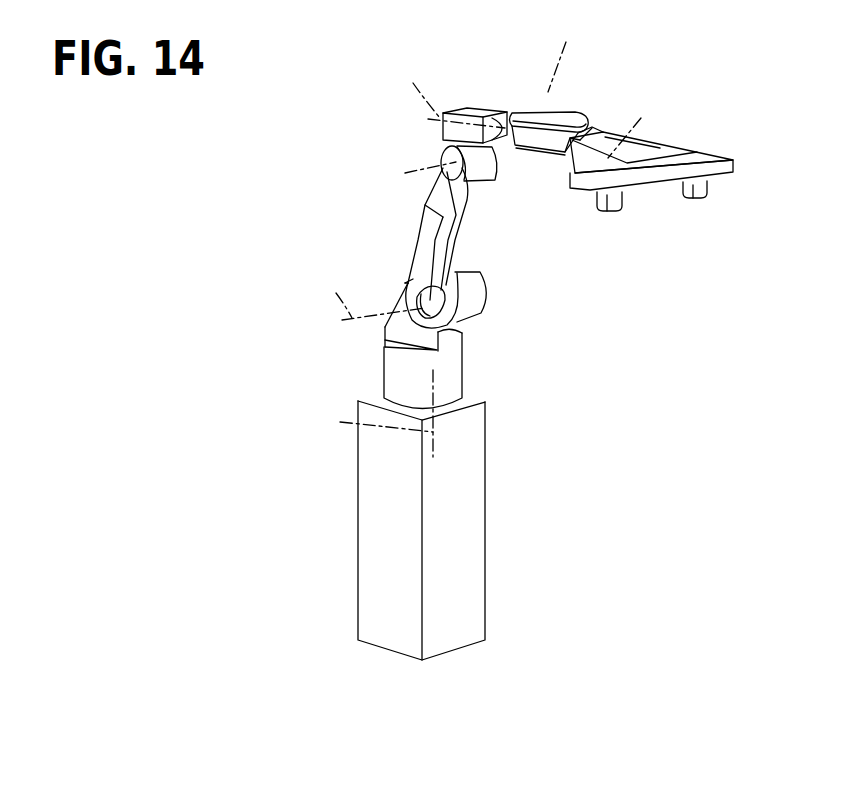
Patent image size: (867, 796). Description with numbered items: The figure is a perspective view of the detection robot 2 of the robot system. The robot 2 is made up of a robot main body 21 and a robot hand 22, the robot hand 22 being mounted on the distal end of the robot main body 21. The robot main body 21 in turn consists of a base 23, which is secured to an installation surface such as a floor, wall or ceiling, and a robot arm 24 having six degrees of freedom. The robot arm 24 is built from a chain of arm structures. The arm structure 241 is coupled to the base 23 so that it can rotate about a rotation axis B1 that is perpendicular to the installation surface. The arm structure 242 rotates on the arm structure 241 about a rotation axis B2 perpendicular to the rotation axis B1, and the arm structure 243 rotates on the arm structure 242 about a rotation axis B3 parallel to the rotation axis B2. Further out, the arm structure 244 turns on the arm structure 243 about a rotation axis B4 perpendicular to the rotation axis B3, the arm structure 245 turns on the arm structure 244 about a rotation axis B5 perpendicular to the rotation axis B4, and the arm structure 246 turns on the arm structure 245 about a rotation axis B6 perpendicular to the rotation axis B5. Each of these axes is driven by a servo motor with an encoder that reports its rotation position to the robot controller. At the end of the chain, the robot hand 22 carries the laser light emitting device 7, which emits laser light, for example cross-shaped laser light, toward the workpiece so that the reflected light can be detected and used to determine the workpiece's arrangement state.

The robot 2 is at (300, 170).
The laser light emitting device 7 is at (622, 212).
The robot main body 21 is at (430, 254).
The robot hand 22 is at (712, 160).
The base 23 is at (465, 522).
The robot arm 24 is at (425, 272).
The arm structure 241 is at (452, 373).
The arm structure 242 is at (443, 241).
The arm structure 243 is at (477, 110).
The arm structure 244 is at (530, 118).
The arm structure 245 is at (586, 128).
The arm structure 246 is at (590, 128).
The rotation axis B1 is at (366, 413).
The rotation axis B2 is at (373, 290).
The rotation axis B3 is at (402, 166).
The rotation axis B4 is at (449, 88).
The rotation axis B5 is at (565, 50).
The rotation axis B6 is at (641, 125).